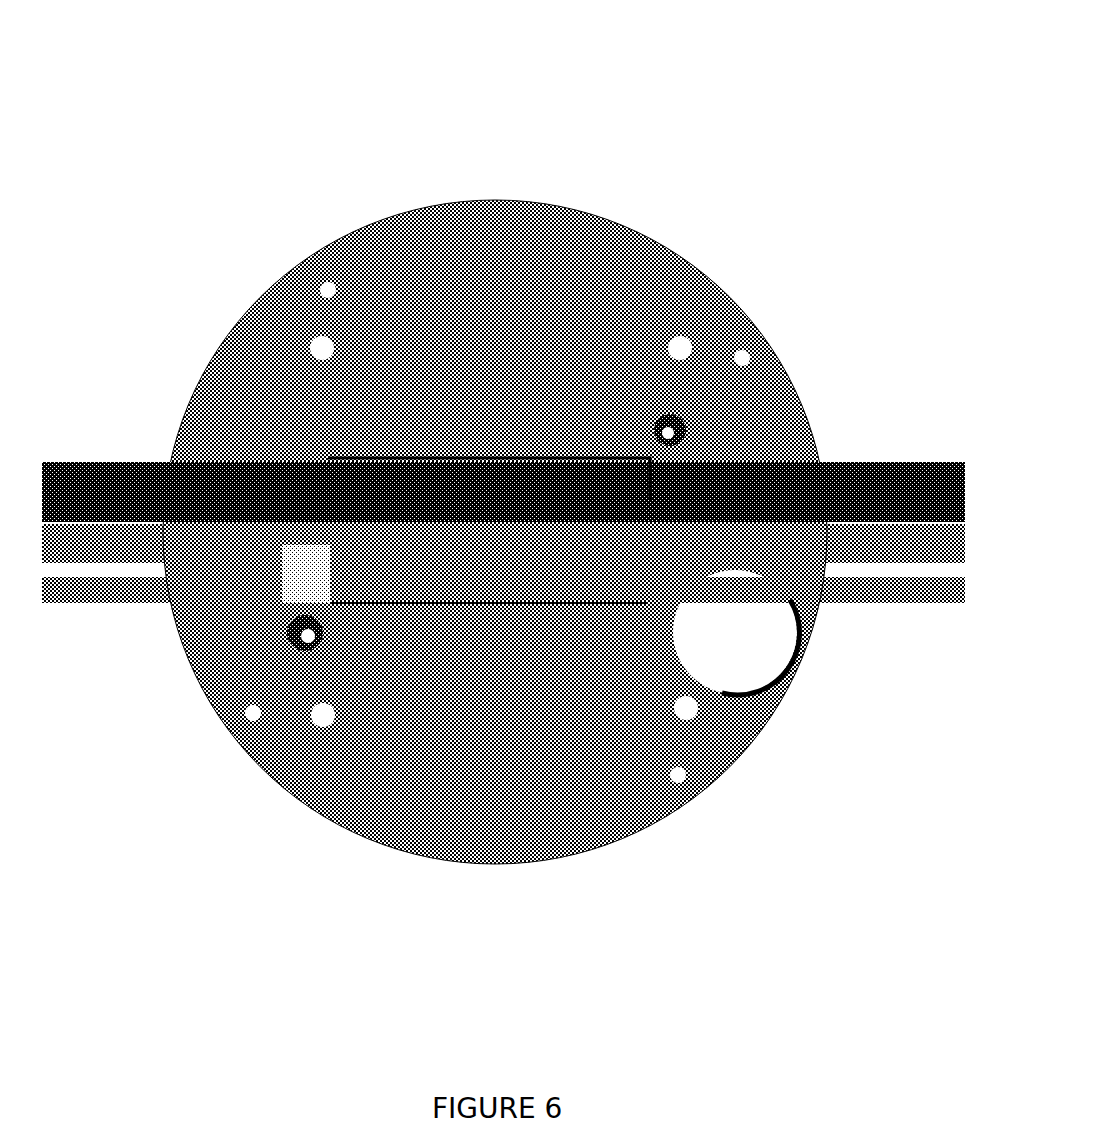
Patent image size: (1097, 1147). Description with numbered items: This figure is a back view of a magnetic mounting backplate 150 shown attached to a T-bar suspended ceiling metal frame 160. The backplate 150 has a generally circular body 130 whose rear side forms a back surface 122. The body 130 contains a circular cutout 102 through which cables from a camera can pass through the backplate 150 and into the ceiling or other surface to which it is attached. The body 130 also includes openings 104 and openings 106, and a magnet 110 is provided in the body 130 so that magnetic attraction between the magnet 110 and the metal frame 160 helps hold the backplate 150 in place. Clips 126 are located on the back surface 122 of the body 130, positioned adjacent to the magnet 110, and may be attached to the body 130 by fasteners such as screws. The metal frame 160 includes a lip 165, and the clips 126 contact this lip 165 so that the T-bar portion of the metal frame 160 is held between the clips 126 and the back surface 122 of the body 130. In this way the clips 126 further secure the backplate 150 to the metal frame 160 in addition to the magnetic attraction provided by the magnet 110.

The magnetic mounting backplate 150 is at (424, 98).
The body 130 is at (485, 212).
The back surface 122 is at (533, 828).
The cutout 102 is at (760, 690).
The T-bar suspended ceiling metal frame 160 is at (172, 455).
The lip 165 is at (178, 577).
The magnet 110 is at (531, 455).
The openings 104 is at (322, 343).
The openings 106 is at (328, 286).
The clips 126 is at (697, 465).